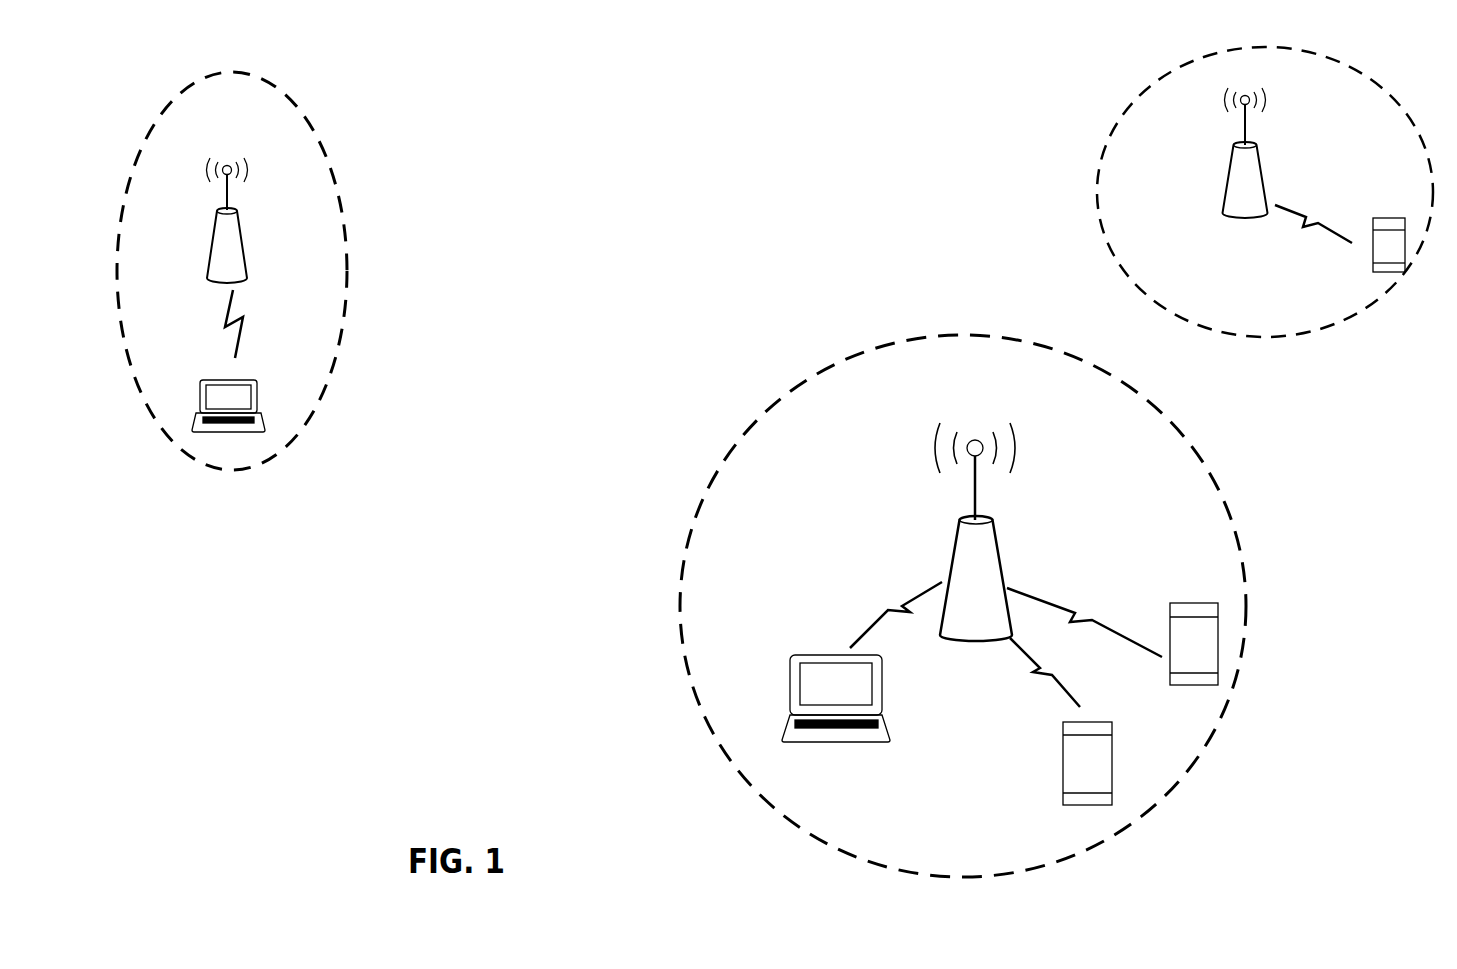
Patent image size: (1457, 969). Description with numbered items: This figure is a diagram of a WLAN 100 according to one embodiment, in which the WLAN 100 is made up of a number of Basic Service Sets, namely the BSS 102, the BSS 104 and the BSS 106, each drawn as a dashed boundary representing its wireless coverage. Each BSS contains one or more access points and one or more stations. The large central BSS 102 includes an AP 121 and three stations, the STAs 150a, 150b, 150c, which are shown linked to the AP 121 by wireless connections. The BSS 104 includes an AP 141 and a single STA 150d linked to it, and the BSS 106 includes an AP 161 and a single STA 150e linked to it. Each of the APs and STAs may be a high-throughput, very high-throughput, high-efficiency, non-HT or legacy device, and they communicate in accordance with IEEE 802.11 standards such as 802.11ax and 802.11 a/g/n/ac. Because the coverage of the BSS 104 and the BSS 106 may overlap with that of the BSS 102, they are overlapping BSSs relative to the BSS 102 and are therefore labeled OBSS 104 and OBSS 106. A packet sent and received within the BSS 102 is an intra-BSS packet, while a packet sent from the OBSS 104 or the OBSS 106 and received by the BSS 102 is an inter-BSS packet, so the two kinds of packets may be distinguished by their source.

The WLAN 100 is at (775, 238).
The BSS 102 is at (1224, 526).
The BSS (OBSS) 104 is at (333, 224).
The BSS (OBSS) 106 is at (1105, 174).
The AP 121 is at (1002, 532).
The AP 141 is at (195, 220).
The AP 161 is at (1250, 164).
The STA 150a is at (862, 675).
The STA 150b is at (1066, 734).
The STA 150c is at (1120, 632).
The STA 150d is at (238, 361).
The STA 150e is at (1352, 233).